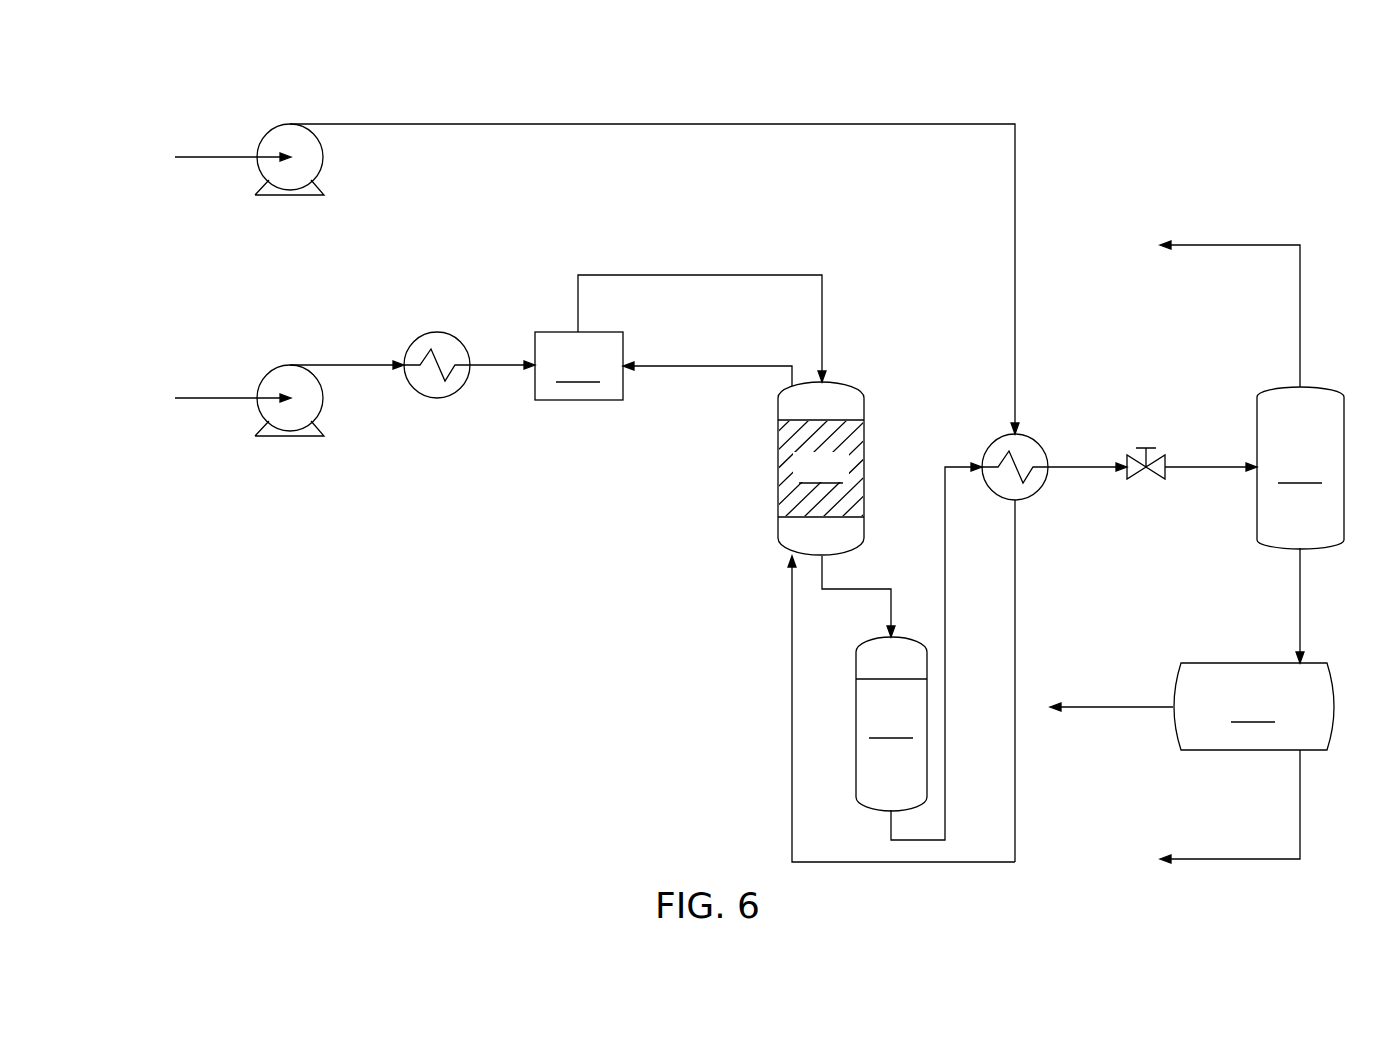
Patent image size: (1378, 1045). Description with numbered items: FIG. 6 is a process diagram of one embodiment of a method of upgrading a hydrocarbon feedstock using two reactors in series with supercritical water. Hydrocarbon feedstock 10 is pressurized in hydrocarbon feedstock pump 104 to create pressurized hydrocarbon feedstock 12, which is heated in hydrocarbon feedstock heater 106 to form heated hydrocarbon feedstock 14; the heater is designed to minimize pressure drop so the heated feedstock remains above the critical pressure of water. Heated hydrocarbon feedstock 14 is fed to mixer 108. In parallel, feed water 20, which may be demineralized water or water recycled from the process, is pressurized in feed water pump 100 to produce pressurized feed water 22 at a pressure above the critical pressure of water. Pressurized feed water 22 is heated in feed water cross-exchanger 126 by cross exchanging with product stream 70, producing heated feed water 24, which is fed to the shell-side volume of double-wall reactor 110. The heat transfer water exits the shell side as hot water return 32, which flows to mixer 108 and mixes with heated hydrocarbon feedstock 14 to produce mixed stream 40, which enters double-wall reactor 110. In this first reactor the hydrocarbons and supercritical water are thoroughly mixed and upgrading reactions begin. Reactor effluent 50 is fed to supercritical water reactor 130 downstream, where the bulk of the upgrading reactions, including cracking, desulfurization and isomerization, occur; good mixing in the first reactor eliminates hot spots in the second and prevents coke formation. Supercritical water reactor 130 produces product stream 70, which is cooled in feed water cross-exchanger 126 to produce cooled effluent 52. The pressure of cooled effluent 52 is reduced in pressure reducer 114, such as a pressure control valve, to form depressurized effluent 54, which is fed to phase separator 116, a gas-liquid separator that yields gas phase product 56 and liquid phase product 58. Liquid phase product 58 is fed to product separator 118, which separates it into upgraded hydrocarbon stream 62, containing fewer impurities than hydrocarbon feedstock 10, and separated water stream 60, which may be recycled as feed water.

The hydrocarbon feedstock 10 is at (226, 398).
The pressurized hydrocarbon feedstock 12 is at (355, 365).
The heated hydrocarbon feedstock 14 is at (500, 365).
The feed water 20 is at (226, 157).
The pressurized feed water 22 is at (388, 124).
The heated feed water 24 is at (1017, 600).
The hot water return 32 is at (715, 366).
The mixed stream 40 is at (605, 275).
The reactor effluent 50 is at (845, 589).
The cooled effluent 52 is at (1068, 467).
The depressurized effluent 54 is at (1208, 467).
The gas phase product 56 is at (1240, 245).
The liquid phase product 58 is at (1300, 603).
The separated water stream 60 is at (1205, 859).
The upgraded hydrocarbon stream 62 is at (1112, 707).
The product stream 70 is at (945, 782).
The feed water pump 100 is at (278, 193).
The hydrocarbon feedstock pump 104 is at (278, 434).
The hydrocarbon feedstock heater 106 is at (437, 398).
The mixer 108 is at (579, 366).
The double-wall reactor 110 is at (825, 468).
The pressure reducer 114 is at (1148, 478).
The phase separator 116 is at (1300, 468).
The product separator 118 is at (1254, 706).
The feed water cross-exchanger 126 is at (1038, 444).
The supercritical water reactor 130 is at (874, 683).